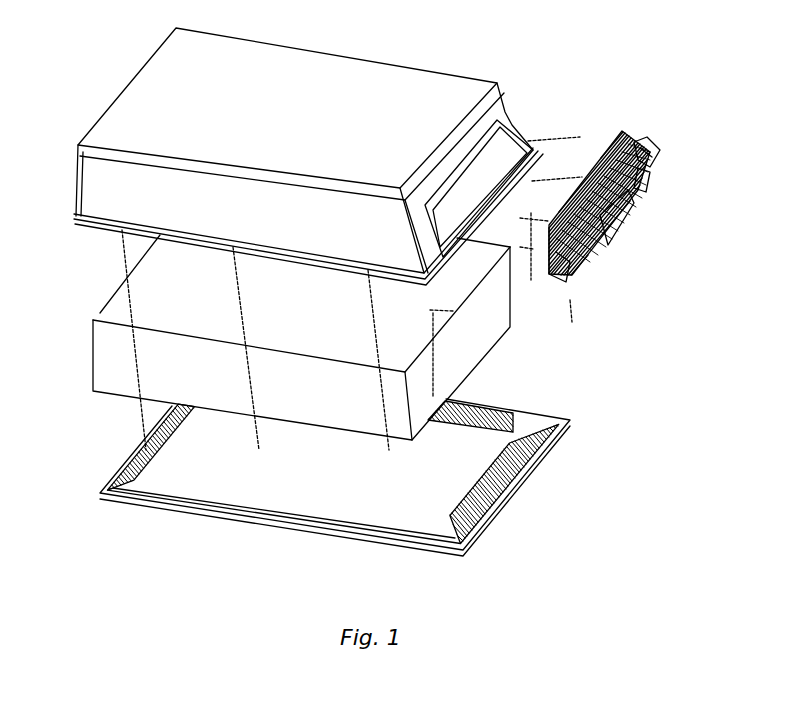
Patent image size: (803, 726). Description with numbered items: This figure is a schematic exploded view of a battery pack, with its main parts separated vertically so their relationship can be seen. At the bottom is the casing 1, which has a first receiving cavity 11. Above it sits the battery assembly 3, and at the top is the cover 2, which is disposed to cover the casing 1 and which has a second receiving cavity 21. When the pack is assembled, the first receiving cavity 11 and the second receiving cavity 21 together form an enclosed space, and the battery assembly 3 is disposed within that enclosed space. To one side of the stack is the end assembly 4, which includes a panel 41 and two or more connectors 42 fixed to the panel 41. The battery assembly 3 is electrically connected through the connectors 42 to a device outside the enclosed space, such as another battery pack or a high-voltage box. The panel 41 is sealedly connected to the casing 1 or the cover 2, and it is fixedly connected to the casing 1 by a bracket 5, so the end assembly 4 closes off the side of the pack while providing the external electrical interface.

The casing 1 is at (130, 460).
The first receiving cavity 11 is at (502, 423).
The cover 2 is at (117, 127).
The second receiving cavity 21 is at (497, 153).
The battery assembly 3 is at (115, 315).
The end assembly 4 is at (626, 226).
The panel 41 is at (640, 145).
The connectors 42 is at (650, 183).
The bracket 5 is at (557, 268).